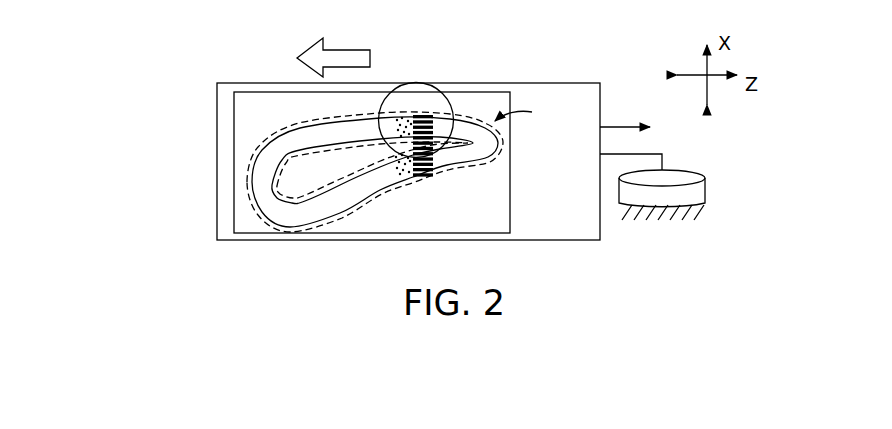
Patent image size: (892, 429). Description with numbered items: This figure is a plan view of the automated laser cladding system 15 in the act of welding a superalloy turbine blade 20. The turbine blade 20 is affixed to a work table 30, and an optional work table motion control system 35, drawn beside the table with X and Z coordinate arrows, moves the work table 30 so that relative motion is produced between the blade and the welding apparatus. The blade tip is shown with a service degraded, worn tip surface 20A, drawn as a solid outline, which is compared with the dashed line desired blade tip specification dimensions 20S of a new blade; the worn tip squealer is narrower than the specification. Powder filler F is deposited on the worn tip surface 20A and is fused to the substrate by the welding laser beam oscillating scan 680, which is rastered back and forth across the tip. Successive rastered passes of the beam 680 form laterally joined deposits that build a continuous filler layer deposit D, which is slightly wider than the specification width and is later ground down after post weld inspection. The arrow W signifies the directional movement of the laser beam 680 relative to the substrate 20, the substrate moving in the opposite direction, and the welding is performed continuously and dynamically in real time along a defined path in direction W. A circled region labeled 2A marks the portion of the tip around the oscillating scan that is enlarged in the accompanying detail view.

The automated laser cladding system 15 is at (178, 170).
The superalloy turbine blade 20 is at (221, 204).
The worn tip surface 20A is at (273, 198).
The desired blade tip specification dimensions 20S is at (296, 203).
The work table 30 is at (226, 117).
The work table motion control system 35 is at (683, 196).
The welding laser beam oscillating scan 680 is at (433, 118).
The section detail of FIG. 2A is at (462, 113).
The powder filler F is at (398, 120).
The continuous filler layer deposit D is at (522, 111).
The arrow indicating directional movement of the laser beam W is at (347, 57).